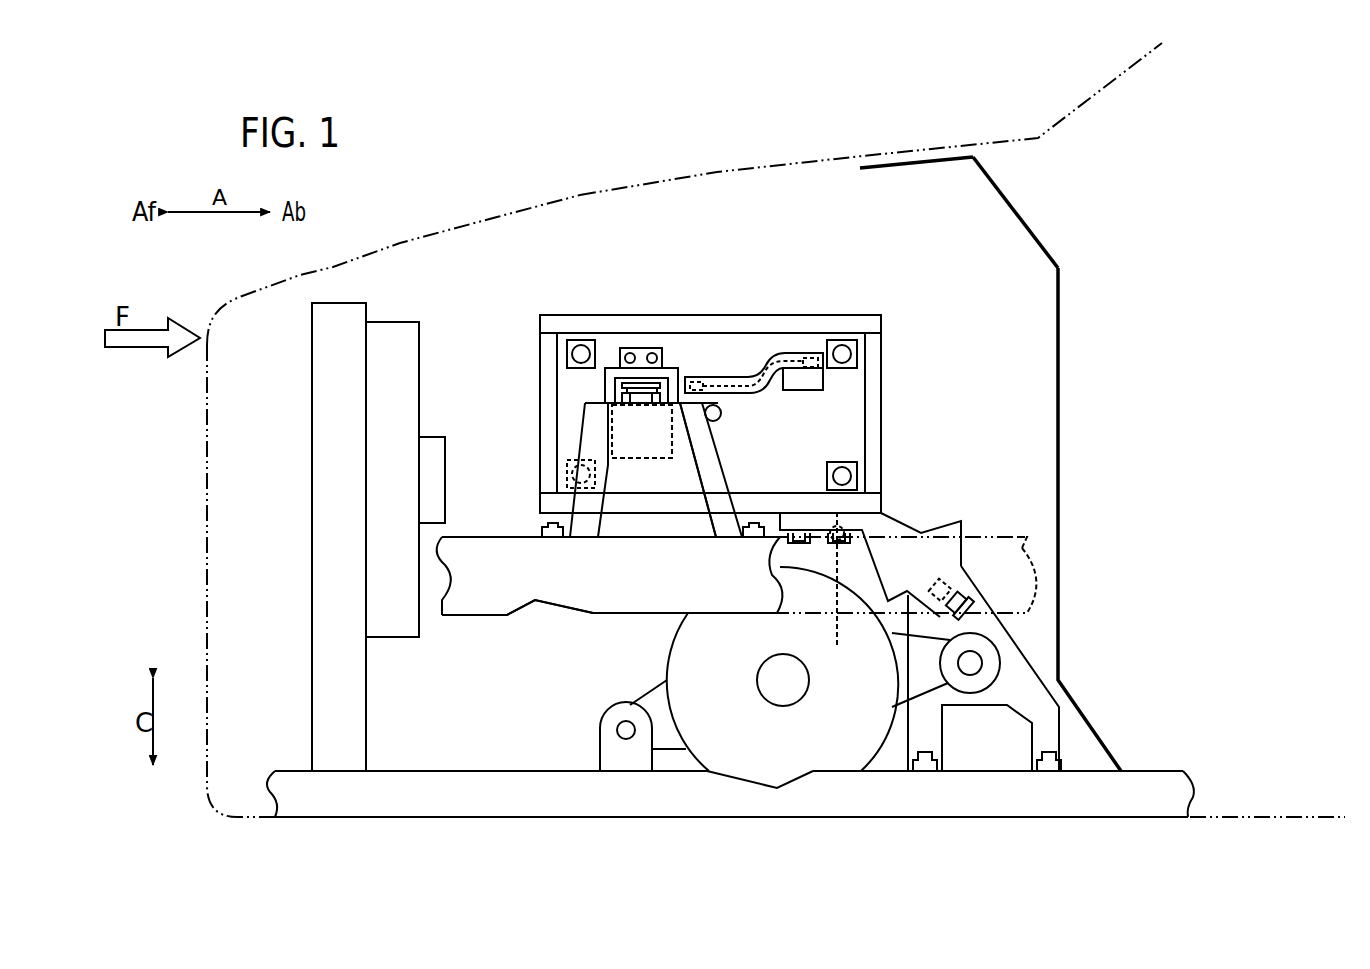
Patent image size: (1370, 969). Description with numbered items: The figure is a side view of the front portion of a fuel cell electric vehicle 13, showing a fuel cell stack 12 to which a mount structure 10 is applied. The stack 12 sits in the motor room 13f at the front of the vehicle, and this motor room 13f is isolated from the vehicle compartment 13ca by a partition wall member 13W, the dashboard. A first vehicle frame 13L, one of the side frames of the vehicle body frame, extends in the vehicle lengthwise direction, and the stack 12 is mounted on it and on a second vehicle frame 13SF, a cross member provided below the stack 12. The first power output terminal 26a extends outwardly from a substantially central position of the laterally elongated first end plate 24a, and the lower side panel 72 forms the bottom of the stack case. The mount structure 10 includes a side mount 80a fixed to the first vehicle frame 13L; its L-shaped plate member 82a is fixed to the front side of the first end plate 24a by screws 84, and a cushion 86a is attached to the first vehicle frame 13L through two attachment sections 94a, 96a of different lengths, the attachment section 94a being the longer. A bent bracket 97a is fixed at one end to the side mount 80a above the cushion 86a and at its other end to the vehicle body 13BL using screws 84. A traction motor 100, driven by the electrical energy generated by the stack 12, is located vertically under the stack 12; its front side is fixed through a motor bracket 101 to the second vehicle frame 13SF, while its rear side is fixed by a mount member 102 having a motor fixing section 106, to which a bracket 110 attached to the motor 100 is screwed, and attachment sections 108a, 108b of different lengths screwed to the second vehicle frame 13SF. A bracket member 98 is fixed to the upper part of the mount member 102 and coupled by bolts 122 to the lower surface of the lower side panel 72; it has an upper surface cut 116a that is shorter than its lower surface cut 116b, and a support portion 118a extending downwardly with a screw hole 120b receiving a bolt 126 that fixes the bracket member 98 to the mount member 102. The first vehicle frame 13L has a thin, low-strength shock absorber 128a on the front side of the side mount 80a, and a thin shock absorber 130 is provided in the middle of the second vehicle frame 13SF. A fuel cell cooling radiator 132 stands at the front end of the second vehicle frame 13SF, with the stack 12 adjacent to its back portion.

The mount structure 10 is at (456, 175).
The fuel cell stack 12 is at (861, 301).
The fuel cell electric vehicle 13 is at (717, 166).
The motor room 13f is at (586, 237).
The vehicle compartment 13ca is at (1095, 308).
The partition wall member 13W is at (1057, 355).
The vehicle body 13BL is at (808, 385).
The first vehicle frame 13L is at (473, 600).
The second vehicle frame 13SF is at (417, 787).
The first end plate 24a is at (805, 340).
The first power output terminal 26a is at (702, 417).
The lower side panel 72 is at (805, 500).
The side mount 80a is at (674, 345).
The plate member 82a is at (646, 349).
The screws 84 is at (630, 350).
The cushion 86a is at (677, 447).
The attachment section 94a is at (700, 503).
The attachment section 96a is at (593, 497).
The bracket 97a is at (727, 395).
The bracket member 98 is at (966, 516).
The traction motor 100 is at (683, 653).
The motor bracket 101 is at (668, 735).
The mount member 102 is at (1010, 675).
The motor fixing section 106 is at (990, 660).
The attachment section 108a is at (933, 735).
The attachment section 108b is at (1055, 735).
The bracket 110 is at (910, 687).
The upper surface cut 116a is at (837, 512).
The lower surface cut 116b is at (845, 594).
The support portion 118a is at (950, 552).
The screw hole 120b is at (973, 577).
The bolts 122 is at (800, 540).
The bolts 126 is at (960, 607).
The shock absorber 128a is at (553, 608).
The shock absorber 130 is at (770, 802).
The radiator 132 is at (322, 366).